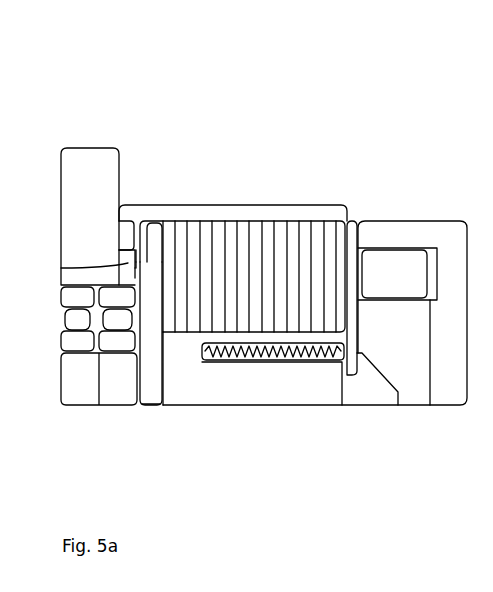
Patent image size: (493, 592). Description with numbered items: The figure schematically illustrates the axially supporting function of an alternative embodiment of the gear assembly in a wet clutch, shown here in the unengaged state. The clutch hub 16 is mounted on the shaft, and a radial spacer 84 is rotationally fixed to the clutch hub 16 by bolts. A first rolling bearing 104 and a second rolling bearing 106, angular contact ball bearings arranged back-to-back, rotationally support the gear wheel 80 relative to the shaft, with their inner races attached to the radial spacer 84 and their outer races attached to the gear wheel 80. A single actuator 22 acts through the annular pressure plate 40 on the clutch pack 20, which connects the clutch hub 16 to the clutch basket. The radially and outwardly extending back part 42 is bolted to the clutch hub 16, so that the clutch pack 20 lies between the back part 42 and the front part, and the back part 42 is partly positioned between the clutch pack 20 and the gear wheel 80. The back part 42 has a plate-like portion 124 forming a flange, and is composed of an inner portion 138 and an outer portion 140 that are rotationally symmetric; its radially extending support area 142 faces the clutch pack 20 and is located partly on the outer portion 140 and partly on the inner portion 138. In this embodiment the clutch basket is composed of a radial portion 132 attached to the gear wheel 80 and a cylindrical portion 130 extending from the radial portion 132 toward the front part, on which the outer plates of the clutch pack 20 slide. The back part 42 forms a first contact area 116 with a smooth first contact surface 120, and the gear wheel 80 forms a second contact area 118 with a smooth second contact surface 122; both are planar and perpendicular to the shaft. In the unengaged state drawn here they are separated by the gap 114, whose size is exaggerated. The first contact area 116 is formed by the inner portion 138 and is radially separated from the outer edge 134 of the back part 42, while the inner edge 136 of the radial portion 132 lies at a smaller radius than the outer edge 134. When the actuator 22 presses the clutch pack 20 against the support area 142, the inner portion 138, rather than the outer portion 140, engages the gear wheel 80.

The gear wheel 80 is at (70, 167).
The second contact surface 122 is at (133, 263).
The second contact area 118 is at (132, 250).
The radial portion 132 is at (125, 232).
The inner edge 136 is at (130, 248).
The gap 114 is at (136, 245).
The outer edge 134 is at (150, 224).
The outer portion 140 is at (163, 250).
The support area 142 is at (155, 245).
The cylindrical portion 130 is at (318, 212).
The pressure plate 40 is at (352, 252).
The actuator 22 is at (330, 305).
The clutch pack 20 is at (387, 302).
The clutch hub 16 is at (332, 368).
The first contact area 116 is at (166, 266).
The first contact surface 120 is at (158, 268).
The inner portion 138 is at (143, 263).
The plate-like portion 124 is at (145, 305).
The back part 42 is at (152, 383).
The radial spacer 84 is at (77, 397).
The second rolling bearing 106 is at (78, 338).
The first rolling bearing 104 is at (118, 338).